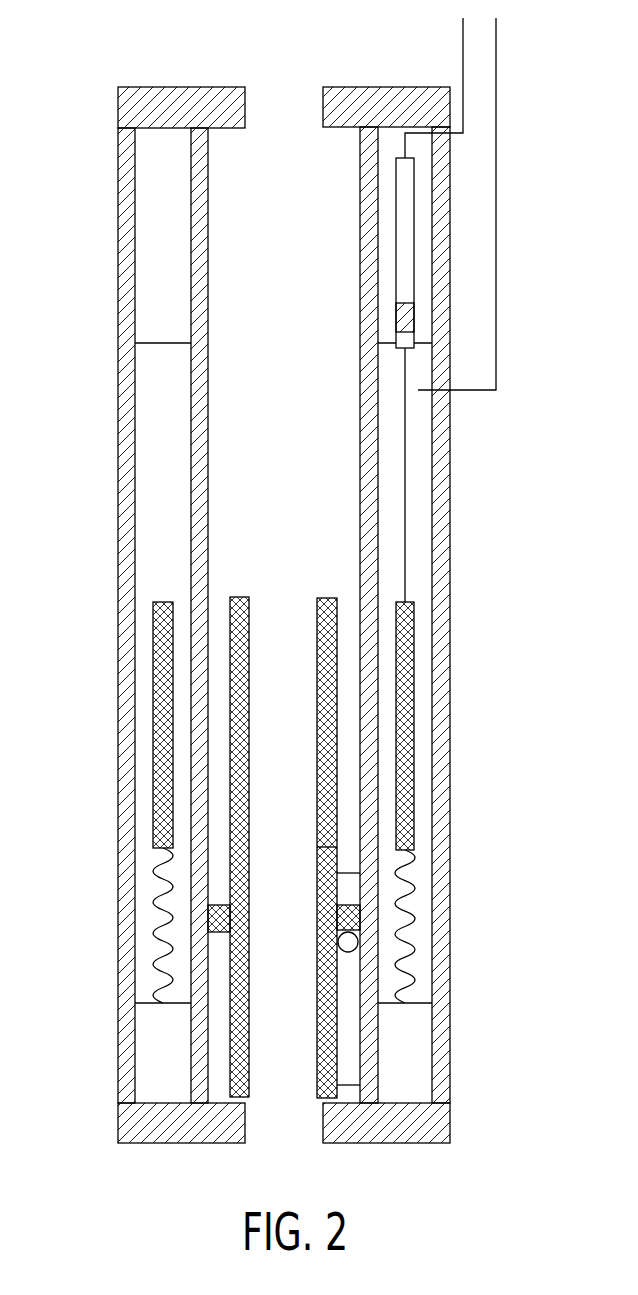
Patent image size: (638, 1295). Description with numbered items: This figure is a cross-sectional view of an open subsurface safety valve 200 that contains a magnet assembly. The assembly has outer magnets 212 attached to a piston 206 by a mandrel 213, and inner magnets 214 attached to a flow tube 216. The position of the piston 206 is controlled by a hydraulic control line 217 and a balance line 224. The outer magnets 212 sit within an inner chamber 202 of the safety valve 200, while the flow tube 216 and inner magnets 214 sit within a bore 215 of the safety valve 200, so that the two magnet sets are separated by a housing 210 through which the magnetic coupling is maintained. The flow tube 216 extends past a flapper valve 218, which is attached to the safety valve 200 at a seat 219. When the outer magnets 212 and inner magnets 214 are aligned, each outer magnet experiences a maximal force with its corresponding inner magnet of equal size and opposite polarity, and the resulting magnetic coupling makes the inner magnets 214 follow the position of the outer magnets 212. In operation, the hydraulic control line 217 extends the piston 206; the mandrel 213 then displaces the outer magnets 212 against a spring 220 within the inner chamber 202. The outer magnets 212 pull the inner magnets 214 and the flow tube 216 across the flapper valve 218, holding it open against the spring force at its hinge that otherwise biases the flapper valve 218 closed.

The subsurface safety valve 200 is at (68, 80).
The inner chamber 202 is at (432, 425).
The piston 206 is at (414, 325).
The housing 210 is at (450, 456).
The outer magnets 212 is at (414, 643).
The mandrel 213 is at (405, 487).
The inner magnets 214 is at (337, 683).
The bore 215 is at (285, 845).
The flow tube 216 is at (360, 873).
The hydraulic control line 217 is at (463, 52).
The flapper valve 218 is at (358, 1013).
The seat 219 is at (360, 918).
The spring 220 is at (414, 890).
The balance line 224 is at (496, 138).